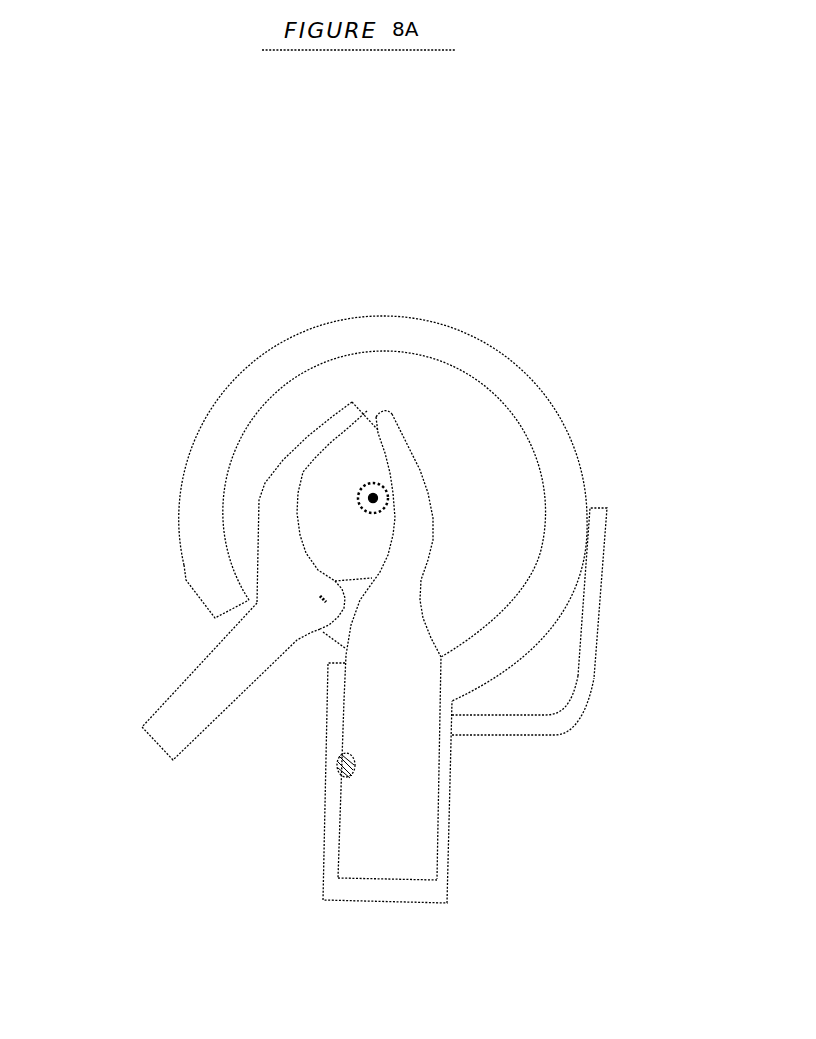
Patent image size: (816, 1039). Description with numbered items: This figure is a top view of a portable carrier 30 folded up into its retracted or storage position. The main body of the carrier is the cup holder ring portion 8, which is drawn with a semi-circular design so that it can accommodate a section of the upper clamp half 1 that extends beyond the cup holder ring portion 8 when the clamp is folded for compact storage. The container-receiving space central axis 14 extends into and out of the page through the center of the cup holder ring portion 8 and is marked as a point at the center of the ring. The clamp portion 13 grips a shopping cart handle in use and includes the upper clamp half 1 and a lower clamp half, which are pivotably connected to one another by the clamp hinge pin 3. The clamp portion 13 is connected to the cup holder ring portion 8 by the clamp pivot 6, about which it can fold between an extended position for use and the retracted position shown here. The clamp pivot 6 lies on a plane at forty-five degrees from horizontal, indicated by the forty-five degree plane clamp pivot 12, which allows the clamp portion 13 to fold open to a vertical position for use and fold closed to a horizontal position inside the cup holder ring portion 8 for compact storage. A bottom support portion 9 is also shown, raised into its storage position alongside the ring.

The portable carrier 30 is at (423, 302).
The cup holder ring portion 8 is at (532, 420).
The clamp portion 13 is at (254, 492).
The container-receiving space central axis 14 is at (359, 493).
The clamp hinge pin 3 is at (324, 603).
The upper clamp half 1 is at (216, 663).
The bottom support portion 9 is at (597, 681).
The 45 degree plane clamp pivot 12 is at (418, 817).
The clamp pivot 6 is at (362, 768).